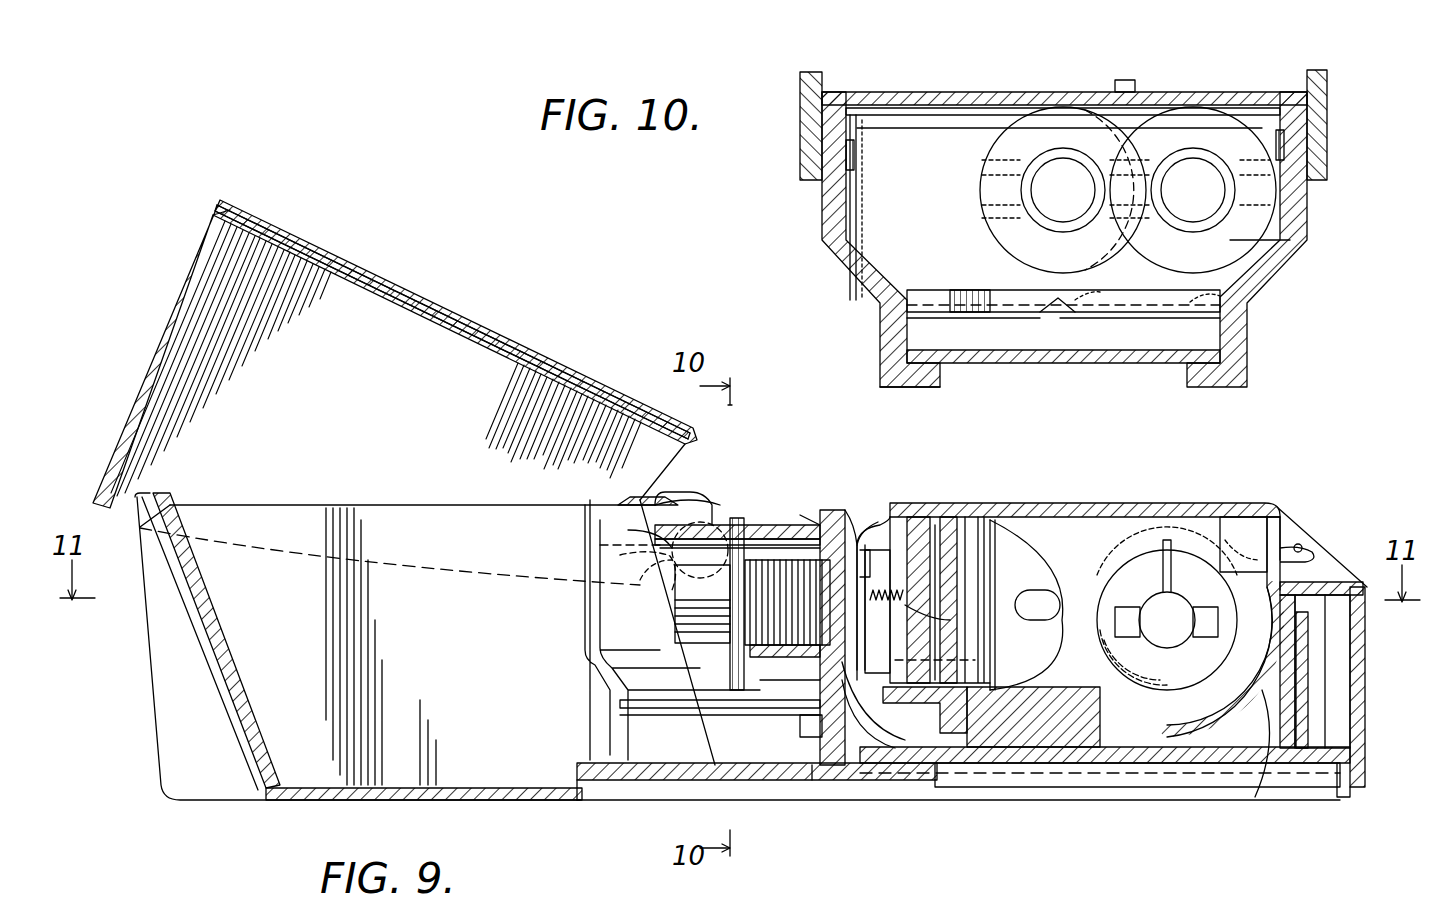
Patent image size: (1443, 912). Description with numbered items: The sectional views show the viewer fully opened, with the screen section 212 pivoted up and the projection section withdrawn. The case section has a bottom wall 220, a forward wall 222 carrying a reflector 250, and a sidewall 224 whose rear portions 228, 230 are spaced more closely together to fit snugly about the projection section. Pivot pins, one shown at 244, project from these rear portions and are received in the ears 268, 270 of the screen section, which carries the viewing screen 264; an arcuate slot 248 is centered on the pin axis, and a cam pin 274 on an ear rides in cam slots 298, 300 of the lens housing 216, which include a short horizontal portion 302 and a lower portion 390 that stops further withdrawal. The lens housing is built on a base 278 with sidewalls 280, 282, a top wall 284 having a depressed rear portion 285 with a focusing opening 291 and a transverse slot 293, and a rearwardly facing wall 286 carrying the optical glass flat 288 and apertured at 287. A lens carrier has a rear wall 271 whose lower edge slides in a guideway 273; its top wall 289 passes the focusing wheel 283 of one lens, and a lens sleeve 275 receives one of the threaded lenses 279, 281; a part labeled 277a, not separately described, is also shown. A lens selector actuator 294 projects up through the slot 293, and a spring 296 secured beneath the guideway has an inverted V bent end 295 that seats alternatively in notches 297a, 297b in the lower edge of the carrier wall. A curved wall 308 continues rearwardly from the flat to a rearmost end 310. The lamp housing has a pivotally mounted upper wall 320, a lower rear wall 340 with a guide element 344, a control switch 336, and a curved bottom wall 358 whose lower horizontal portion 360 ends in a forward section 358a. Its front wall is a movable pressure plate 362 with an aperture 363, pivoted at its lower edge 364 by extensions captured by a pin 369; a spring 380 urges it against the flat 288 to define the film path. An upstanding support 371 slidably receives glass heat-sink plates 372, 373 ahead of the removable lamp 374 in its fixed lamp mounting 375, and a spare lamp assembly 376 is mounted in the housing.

In FIG. 9, the screen section 212 is at (408, 252).
In FIG. 9, the viewing screen 264 is at (452, 320).
In FIG. 9, the forward wall 222 is at (228, 736).
In FIG. 9, the reflector 250 is at (232, 680).
In FIG. 9, the sidewall 224 is at (440, 659).
In FIG. 10, the bottom wall 220 is at (1138, 360).
In FIG. 9, the bottom wall 220 is at (425, 802).
In FIG. 10, the lens housing 216 is at (1008, 380).
In FIG. 9, the lens housing 216 is at (1120, 795).
In FIG. 9, the base 278 is at (1015, 782).
In FIG. 9, the lower horizontal portion 360 is at (1082, 785).
In FIG. 9, the rearmost end 310 is at (1262, 775).
In FIG. 10, the ear 270 is at (810, 74).
In FIG. 10, the ear 268 is at (1318, 72).
In FIG. 10, the lens selector actuator 294 is at (1130, 80).
In FIG. 10, the rear sidewall portion 230 is at (838, 95).
In FIG. 9, the rear sidewall portion 230 is at (730, 524).
In FIG. 10, the sidewall 280 is at (1290, 208).
In FIG. 10, the rear sidewall portion 228 is at (1292, 95).
In FIG. 10, the focusing opening 291 is at (1040, 108).
In FIG. 9, the focusing opening 291 is at (720, 522).
In FIG. 10, the cam slot 300 is at (852, 152).
In FIG. 9, the cam slot 300 is at (650, 585).
In FIG. 10, the sidewall 282 is at (850, 202).
In FIG. 9, the sidewall 282 is at (685, 690).
In FIG. 10, the cam slot 298 is at (1290, 140).
In FIG. 10, the top wall of lens carrier 289 is at (1000, 122).
In FIG. 9, the top wall of lens carrier 289 is at (684, 522).
In FIG. 10, the rear wall of lens carrier 271 is at (1040, 278).
In FIG. 9, the rear wall of lens carrier 271 is at (800, 705).
In FIG. 10, the focusing wheel 283 is at (1010, 235).
In FIG. 9, the focusing wheel 283 is at (730, 668).
In FIG. 10, the lens 279 is at (1081, 200).
In FIG. 9, the lens 279 is at (690, 616).
In FIG. 10, the lens 281 is at (1211, 200).
In FIG. 10, the lower guideway 273 is at (1002, 308).
In FIG. 9, the lower guideway 273 is at (800, 722).
In FIG. 10, the carrier latch spring 296 is at (1140, 322).
In FIG. 10, the bent end 295 is at (1058, 306).
In FIG. 9, the bent end 295 is at (833, 782).
In FIG. 10, the notch 297a is at (1085, 292).
In FIG. 10, the notch 297b is at (1225, 302).
In FIG. 10, the depressed rear portion 285 is at (1235, 258).
In FIG. 9, the depressed rear portion 285 is at (812, 520).
In FIG. 9, the horizontal slot portion 302 is at (616, 504).
In FIG. 9, the top wall 284 is at (640, 515).
In FIG. 9, the aperture 287 is at (740, 536).
In FIG. 9, the transverse slot 293 is at (790, 530).
In FIG. 9, the rearwardly facing wall 286 is at (850, 518).
In FIG. 9, the optical glass flat 288 is at (855, 525).
In FIG. 9, the pivot pin 244 is at (722, 581).
In FIG. 9, the arcuate slot 248 is at (655, 566).
In FIG. 9, the cam pin 274 is at (652, 552).
In FIG. 9, the lower portion of cam slot 390 is at (600, 543).
In FIG. 9, the movable pressure plate 362 is at (820, 690).
In FIG. 9, the lens sleeve 275 is at (790, 682).
In FIG. 9, the block 277a is at (810, 740).
In FIG. 9, the upper wall 320 is at (1108, 504).
In FIG. 9, the lower rear wall 340 is at (1365, 720).
In FIG. 9, the control switch 336 is at (1255, 518).
In FIG. 9, the guide element 344 is at (1340, 678).
In FIG. 9, the lower edge 364 is at (900, 710).
In FIG. 9, the upstanding support 371 is at (962, 516).
In FIG. 9, the aperture 363 is at (885, 586).
In FIG. 9, the removable lamp 374 is at (1045, 592).
In FIG. 9, the glass plate 373 is at (950, 563).
In FIG. 9, the glass plate 372 is at (930, 596).
In FIG. 9, the spring 380 is at (950, 620).
In FIG. 9, the pin 369 is at (975, 655).
In FIG. 9, the curved bottom wall 358 is at (1235, 690).
In FIG. 9, the lamp mounting 375 is at (1095, 640).
In FIG. 9, the spare lamp assembly 376 is at (1148, 545).
In FIG. 9, the forward section 358a is at (1090, 627).
In FIG. 9, the curved wall 308 is at (870, 732).